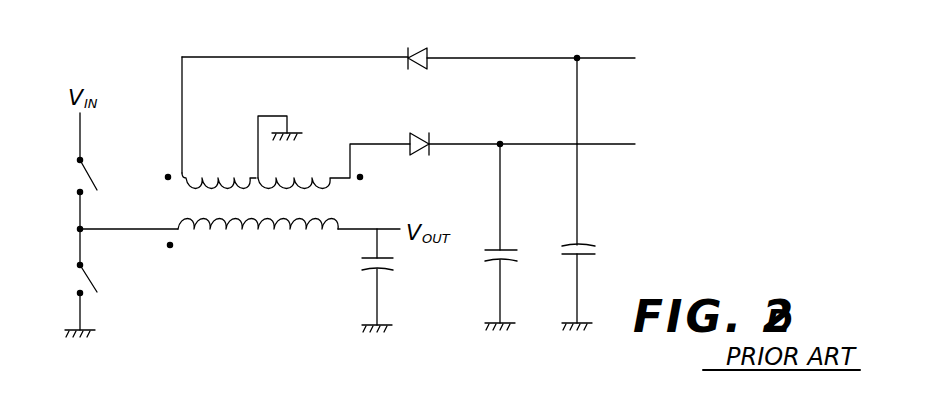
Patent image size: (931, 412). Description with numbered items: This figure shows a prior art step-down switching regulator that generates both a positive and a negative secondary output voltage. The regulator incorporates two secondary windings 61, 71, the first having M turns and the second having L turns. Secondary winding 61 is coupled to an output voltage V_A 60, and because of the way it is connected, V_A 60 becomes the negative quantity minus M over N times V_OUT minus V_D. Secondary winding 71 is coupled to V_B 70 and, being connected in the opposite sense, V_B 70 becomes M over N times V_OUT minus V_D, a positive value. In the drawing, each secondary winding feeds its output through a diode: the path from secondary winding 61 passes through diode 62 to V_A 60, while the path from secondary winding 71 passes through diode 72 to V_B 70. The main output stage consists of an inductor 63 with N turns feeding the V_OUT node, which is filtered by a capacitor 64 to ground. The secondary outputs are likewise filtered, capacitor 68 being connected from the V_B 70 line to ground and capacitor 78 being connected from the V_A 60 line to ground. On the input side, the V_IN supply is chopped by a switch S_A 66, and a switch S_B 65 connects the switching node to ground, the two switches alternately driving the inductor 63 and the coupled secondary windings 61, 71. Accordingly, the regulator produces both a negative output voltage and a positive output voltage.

The output voltage V_A 60 is at (668, 58).
The output voltage V_B 70 is at (670, 145).
The secondary winding 61 is at (218, 140).
The secondary winding 71 is at (293, 168).
The diode VD 62 is at (443, 47).
The diode VD 72 is at (444, 138).
The inductor N 63 is at (288, 240).
The output capacitor 64 is at (437, 220).
The capacitor 68 is at (516, 258).
The capacitor 78 is at (595, 247).
The switch SA 66 is at (75, 187).
The switch SB 65 is at (75, 293).